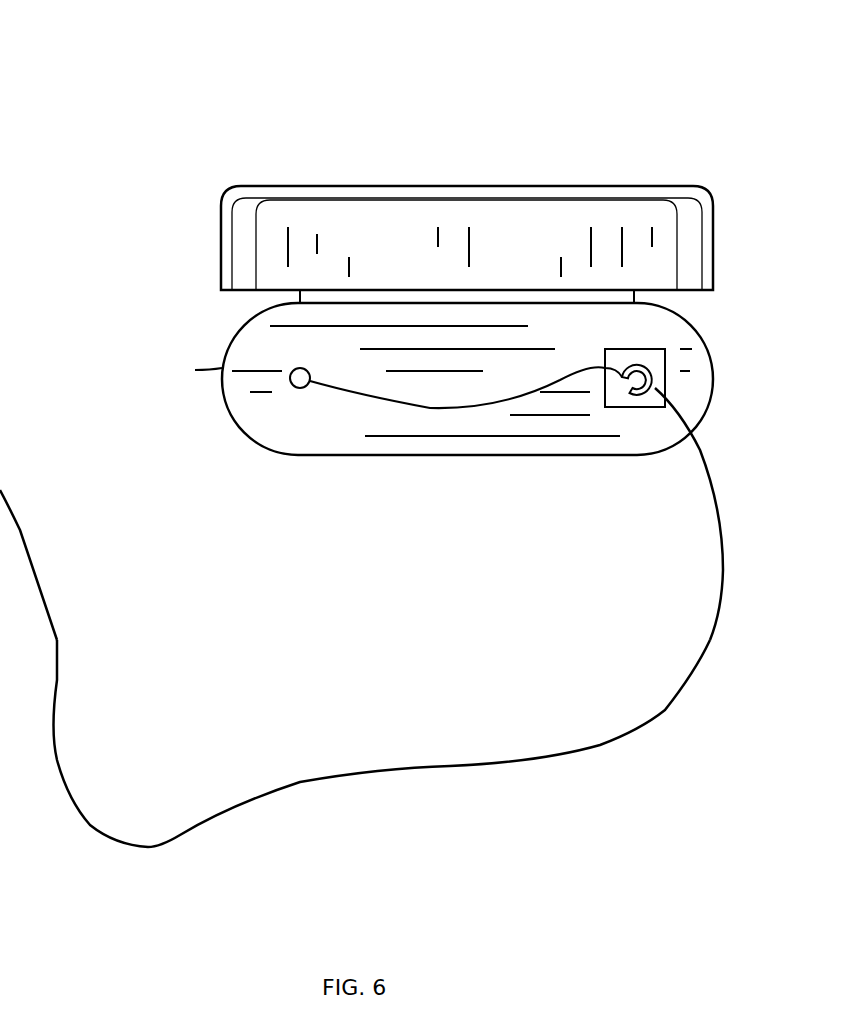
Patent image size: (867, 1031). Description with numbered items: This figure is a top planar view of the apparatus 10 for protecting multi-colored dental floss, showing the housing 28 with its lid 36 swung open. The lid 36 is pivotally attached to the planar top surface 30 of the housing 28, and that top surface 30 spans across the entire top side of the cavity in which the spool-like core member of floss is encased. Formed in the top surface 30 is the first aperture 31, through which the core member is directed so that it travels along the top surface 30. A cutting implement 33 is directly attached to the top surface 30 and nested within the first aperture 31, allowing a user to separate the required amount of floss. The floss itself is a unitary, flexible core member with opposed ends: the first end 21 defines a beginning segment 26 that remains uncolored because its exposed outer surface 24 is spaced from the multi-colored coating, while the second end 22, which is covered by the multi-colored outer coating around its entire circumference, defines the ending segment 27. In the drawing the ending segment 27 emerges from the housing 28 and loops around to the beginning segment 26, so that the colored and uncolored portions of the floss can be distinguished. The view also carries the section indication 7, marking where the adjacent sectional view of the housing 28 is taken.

The apparatus 10 is at (106, 96).
The lid 36 is at (558, 201).
The housing 28 is at (712, 350).
The first aperture 31 is at (289, 378).
The cutting implement 33 is at (658, 355).
The second end 22 is at (667, 377).
The planar top surface 30 is at (717, 400).
The first end 21 is at (0, 490).
The exposed outer surface 24 is at (60, 633).
The beginning segment 26 is at (92, 822).
The ending segment 27 is at (664, 710).
The section line 7 is at (530, 862).